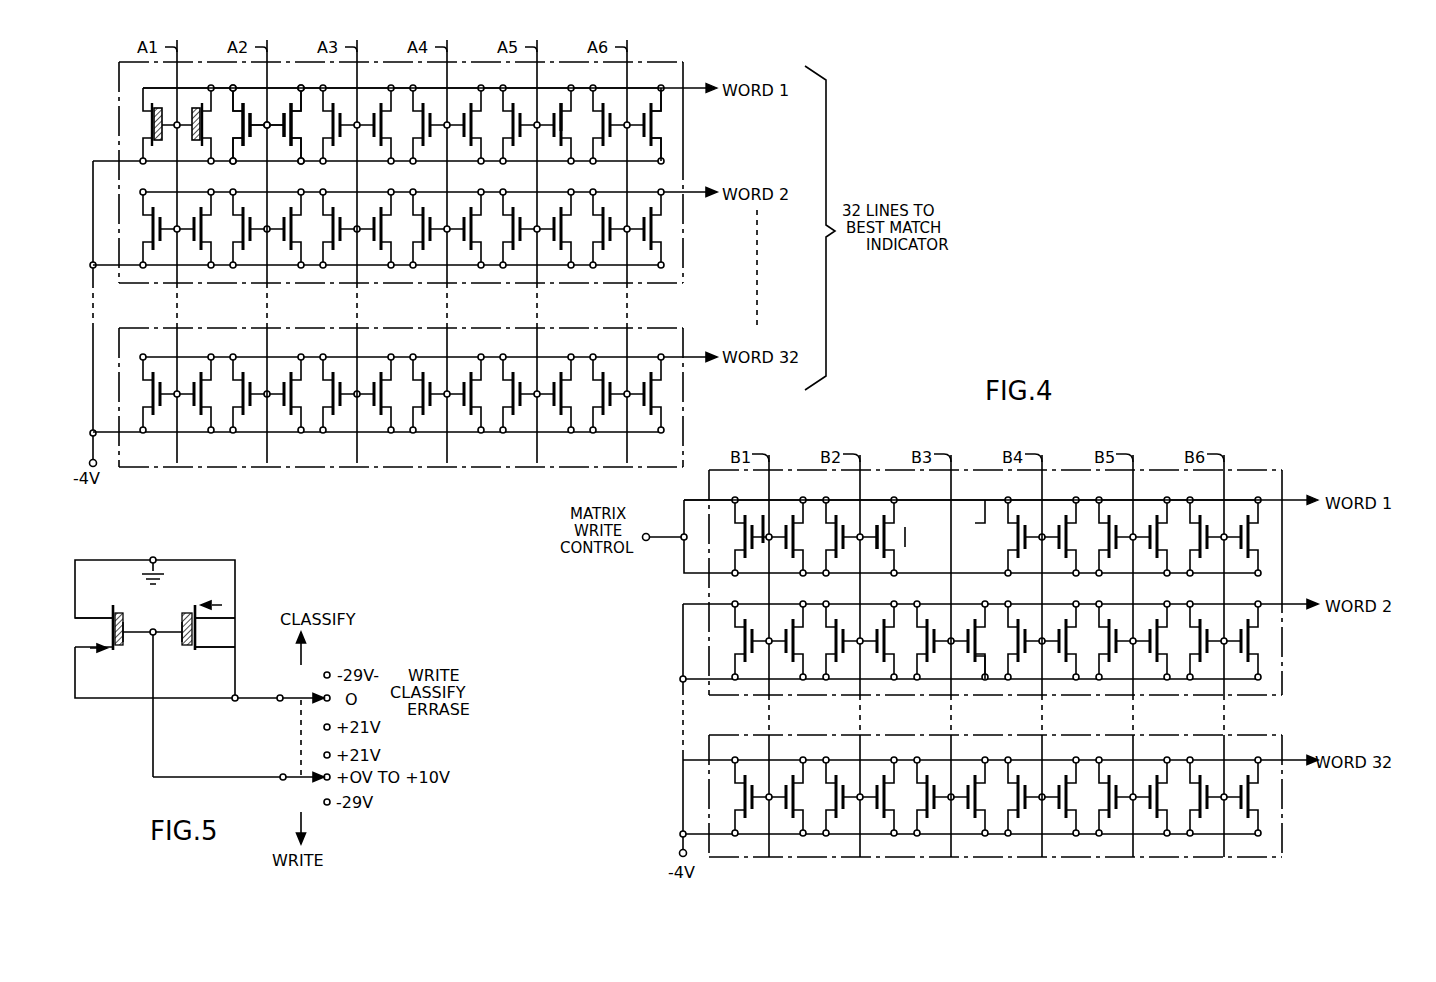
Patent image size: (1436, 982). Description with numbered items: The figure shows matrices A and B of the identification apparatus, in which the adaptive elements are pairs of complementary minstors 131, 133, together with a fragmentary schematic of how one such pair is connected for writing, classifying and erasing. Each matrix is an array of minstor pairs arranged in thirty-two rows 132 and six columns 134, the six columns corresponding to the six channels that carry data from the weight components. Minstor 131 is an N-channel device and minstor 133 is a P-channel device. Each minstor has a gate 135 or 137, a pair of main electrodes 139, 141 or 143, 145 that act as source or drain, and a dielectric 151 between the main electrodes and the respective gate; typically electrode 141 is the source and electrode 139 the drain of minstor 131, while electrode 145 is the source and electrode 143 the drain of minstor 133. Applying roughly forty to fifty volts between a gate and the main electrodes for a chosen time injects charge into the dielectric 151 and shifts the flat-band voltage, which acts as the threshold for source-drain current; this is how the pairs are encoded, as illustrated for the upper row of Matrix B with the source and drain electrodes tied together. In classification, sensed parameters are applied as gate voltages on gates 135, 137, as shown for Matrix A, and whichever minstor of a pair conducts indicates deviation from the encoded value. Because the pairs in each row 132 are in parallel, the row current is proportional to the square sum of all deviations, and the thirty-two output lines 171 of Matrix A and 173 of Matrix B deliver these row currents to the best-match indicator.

In FIG. 4, the minstor 131 is at (337, 143).
In FIG. 5, the minstor 131 is at (136, 676).
In FIG. 4, the row 132 is at (700, 93).
In FIG. 4, the minstor 133 is at (375, 140).
In FIG. 5, the minstor 133 is at (186, 615).
In FIG. 4, the column 134 is at (352, 79).
In FIG. 4, the gate 135 is at (520, 105).
In FIG. 5, the gate 135 is at (124, 623).
In FIG. 4, the gate 137 is at (548, 103).
In FIG. 5, the gate 137 is at (181, 640).
In FIG. 4, the main electrode 139 is at (600, 105).
In FIG. 5, the main electrode 139 is at (94, 617).
In FIG. 4, the main electrode 141 is at (905, 580).
In FIG. 5, the main electrode 141 is at (85, 650).
In FIG. 4, the main electrode 143 is at (657, 116).
In FIG. 5, the main electrode 143 is at (232, 620).
In FIG. 4, the main electrode 145 is at (657, 138).
In FIG. 5, the main electrode 145 is at (232, 645).
In FIG. 4, the dielectric 151 is at (155, 110).
In FIG. 5, the dielectric 151 is at (118, 614).
In FIG. 4, the output line 171 is at (692, 88).
In FIG. 4, the output line 173 is at (1292, 500).